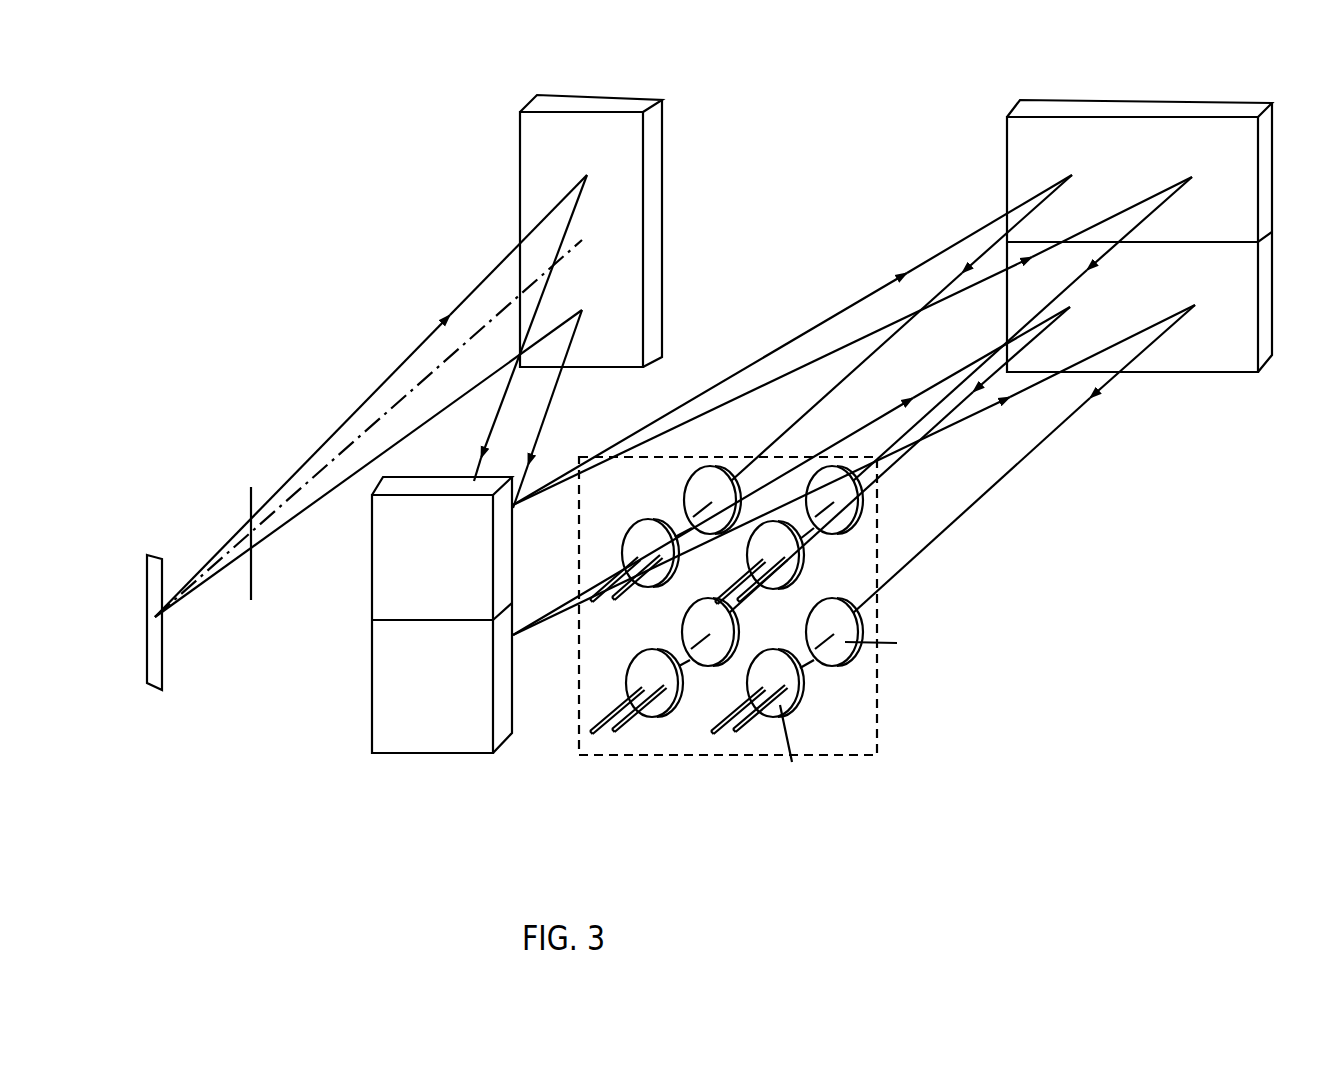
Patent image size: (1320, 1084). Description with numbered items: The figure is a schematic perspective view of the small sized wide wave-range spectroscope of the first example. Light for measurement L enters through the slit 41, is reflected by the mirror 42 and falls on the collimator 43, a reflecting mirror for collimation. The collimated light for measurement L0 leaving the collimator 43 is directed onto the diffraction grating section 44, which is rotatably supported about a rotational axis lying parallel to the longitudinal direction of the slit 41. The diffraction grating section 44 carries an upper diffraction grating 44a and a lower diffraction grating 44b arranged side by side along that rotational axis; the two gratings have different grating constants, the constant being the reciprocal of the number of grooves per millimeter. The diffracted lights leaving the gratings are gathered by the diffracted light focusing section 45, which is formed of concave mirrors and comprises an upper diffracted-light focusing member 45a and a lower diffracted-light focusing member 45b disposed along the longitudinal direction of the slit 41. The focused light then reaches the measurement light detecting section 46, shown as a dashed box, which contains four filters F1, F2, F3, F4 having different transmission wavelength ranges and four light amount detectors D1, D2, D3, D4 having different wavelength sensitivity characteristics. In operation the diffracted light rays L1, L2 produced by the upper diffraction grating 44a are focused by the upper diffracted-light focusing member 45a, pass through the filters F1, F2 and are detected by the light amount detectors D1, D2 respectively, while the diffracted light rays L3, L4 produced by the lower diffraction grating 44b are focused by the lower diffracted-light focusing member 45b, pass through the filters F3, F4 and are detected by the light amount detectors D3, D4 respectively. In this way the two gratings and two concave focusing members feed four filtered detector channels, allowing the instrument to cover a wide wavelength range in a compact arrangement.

The slit 41 is at (156, 658).
The mirror 42 is at (249, 506).
The collimator 43 is at (662, 256).
The diffraction grating section 44 is at (413, 615).
The upper diffraction grating 44a is at (445, 581).
The lower diffraction grating 44b is at (432, 718).
The diffracted light focusing section 45 is at (1139, 213).
The upper diffracted-light focusing member 45a is at (1148, 171).
The lower diffracted-light focusing member 45b is at (1154, 312).
The measurement light detecting section 46 is at (882, 705).
The light for measurement L is at (375, 457).
The collimated light for measurement L0 is at (548, 398).
The diffracted light ray L1 is at (980, 253).
The diffracted light ray L2 is at (1013, 263).
The diffracted light ray L3 is at (980, 385).
The diffracted light ray L4 is at (977, 418).
The filter F1 is at (697, 490).
The filter F2 is at (855, 510).
The filter F3 is at (697, 621).
The filter F4 is at (812, 621).
The light amount detector D1 is at (638, 542).
The light amount detector D2 is at (797, 560).
The light amount detector D3 is at (640, 666).
The light amount detector D4 is at (755, 680).